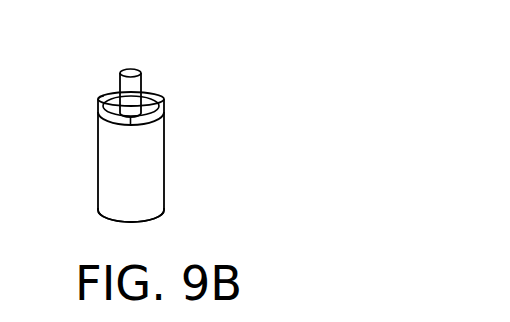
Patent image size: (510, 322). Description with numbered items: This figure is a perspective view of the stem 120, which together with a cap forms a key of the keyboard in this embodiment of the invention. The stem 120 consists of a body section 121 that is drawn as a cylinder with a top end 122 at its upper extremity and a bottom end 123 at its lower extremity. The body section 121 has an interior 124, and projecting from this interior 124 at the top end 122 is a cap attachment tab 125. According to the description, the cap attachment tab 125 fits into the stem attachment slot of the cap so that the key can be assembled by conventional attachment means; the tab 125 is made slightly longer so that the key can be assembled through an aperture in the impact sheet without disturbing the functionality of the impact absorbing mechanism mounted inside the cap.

The stem 120 is at (193, 172).
The body section 121 is at (127, 190).
The top end 122 is at (163, 101).
The bottom end 123 is at (165, 210).
The interior 124 is at (102, 97).
The cap attachment tab 125 is at (132, 88).